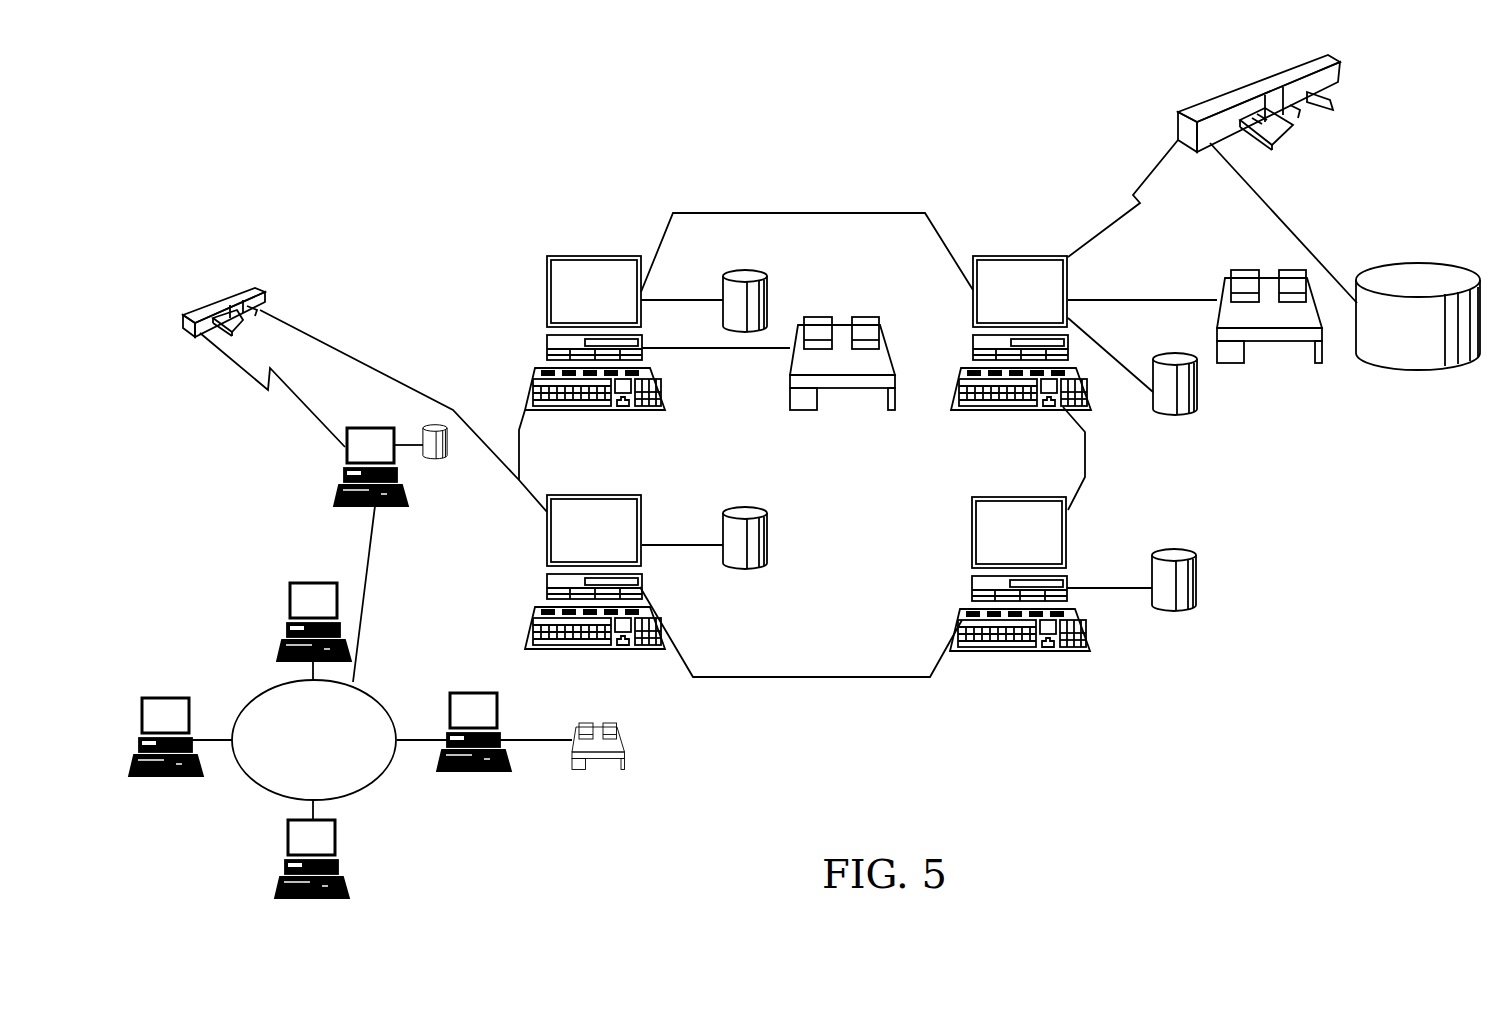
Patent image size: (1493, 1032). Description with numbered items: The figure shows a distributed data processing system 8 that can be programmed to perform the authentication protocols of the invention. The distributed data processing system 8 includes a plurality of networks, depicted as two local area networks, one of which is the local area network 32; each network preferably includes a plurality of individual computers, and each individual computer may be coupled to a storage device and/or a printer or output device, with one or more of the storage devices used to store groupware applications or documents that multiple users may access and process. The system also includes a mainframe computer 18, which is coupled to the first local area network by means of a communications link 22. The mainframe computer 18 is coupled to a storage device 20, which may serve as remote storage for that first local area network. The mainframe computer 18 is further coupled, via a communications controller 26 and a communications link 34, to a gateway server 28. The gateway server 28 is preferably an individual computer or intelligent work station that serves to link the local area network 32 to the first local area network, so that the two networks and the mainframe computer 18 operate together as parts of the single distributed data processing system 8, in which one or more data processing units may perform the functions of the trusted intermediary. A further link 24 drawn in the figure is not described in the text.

The distributed data processing system 8 is at (815, 178).
The mainframe computer 18 is at (1235, 90).
The storage device 20 is at (1418, 270).
The communications link 22 is at (1145, 183).
The communication link 24 is at (320, 347).
The communications controller 26 is at (227, 297).
The gateway server 28 is at (375, 428).
The local area network 32 is at (257, 783).
The communications link 34 is at (280, 382).